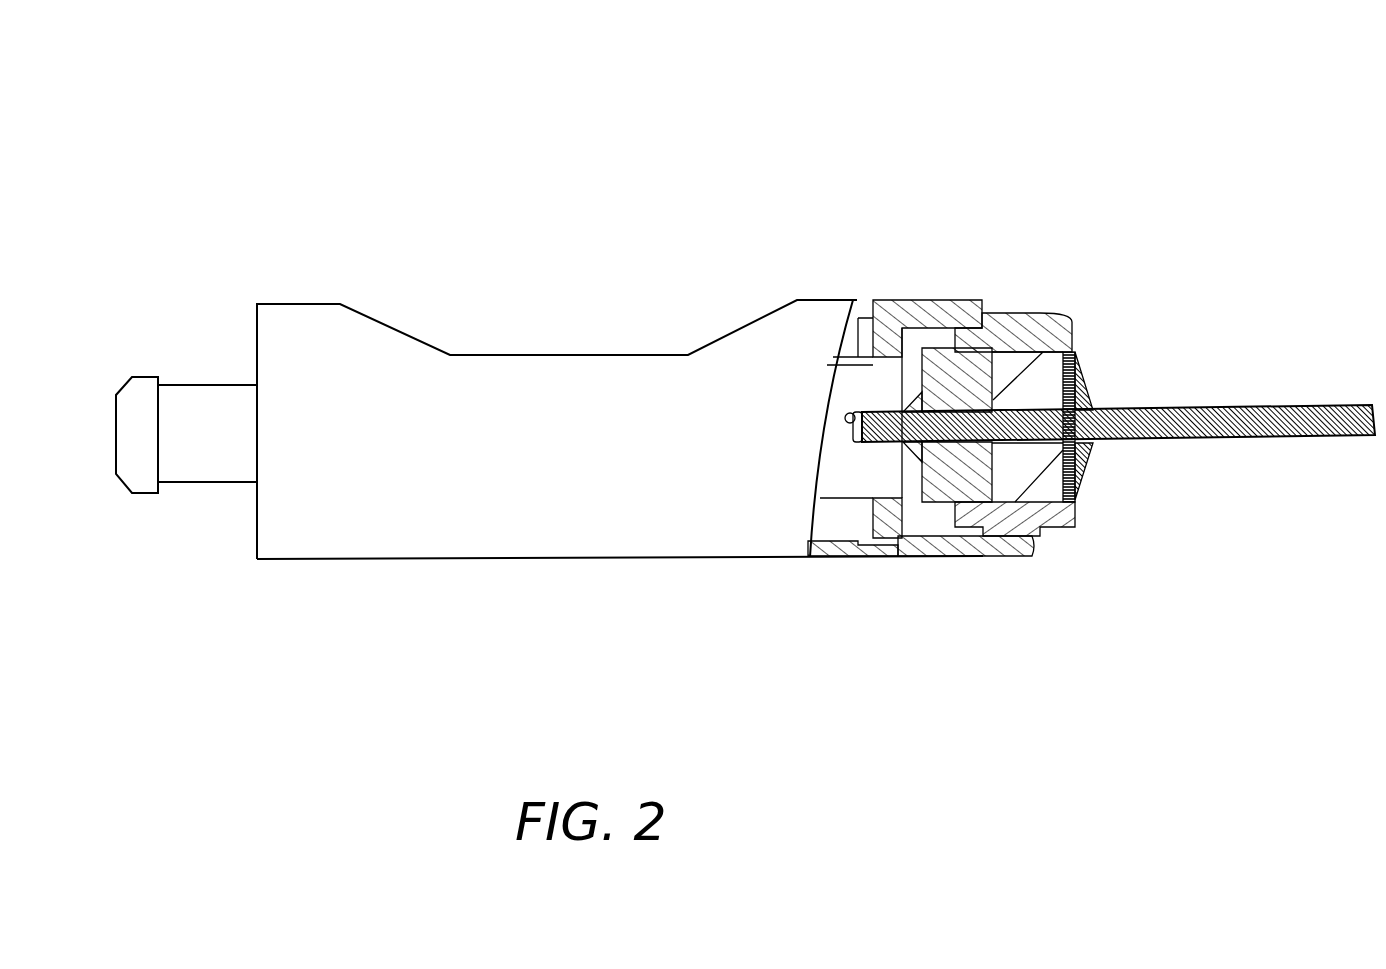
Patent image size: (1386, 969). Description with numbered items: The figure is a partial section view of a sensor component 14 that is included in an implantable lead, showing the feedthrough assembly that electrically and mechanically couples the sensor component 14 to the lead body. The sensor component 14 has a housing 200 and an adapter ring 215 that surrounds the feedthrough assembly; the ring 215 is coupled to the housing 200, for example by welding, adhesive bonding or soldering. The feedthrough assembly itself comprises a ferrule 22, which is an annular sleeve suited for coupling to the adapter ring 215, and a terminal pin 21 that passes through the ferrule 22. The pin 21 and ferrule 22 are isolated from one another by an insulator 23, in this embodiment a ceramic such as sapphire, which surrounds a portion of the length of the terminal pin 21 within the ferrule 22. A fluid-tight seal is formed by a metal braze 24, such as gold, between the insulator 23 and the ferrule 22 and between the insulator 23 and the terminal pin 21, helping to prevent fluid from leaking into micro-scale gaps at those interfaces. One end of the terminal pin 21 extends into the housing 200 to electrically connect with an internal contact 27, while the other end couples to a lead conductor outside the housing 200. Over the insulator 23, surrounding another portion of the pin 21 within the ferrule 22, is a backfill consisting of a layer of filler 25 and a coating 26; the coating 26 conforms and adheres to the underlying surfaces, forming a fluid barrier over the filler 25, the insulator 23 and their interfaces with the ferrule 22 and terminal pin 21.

The sensor component 14 is at (696, 143).
The housing 200 is at (672, 537).
The terminal pin 21 is at (1120, 441).
The ferrule 22 is at (1058, 327).
The insulator 23 is at (980, 556).
The metal braze 24 is at (903, 410).
The filler 25 is at (1080, 547).
The coating 26 is at (1080, 370).
The internal contact 27 is at (848, 412).
The adapter ring 215 is at (933, 556).